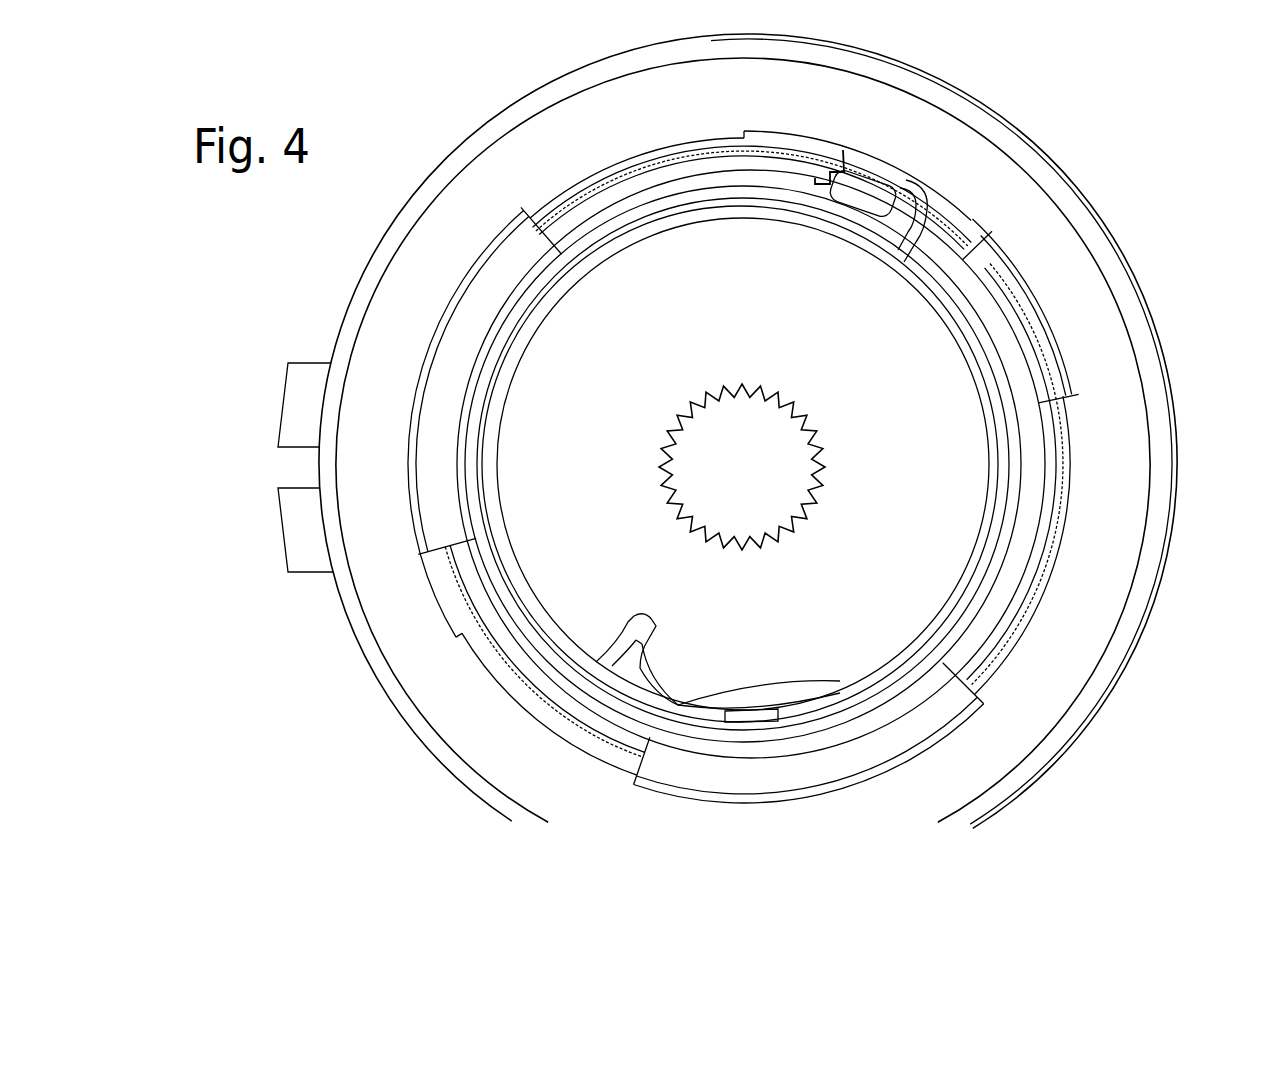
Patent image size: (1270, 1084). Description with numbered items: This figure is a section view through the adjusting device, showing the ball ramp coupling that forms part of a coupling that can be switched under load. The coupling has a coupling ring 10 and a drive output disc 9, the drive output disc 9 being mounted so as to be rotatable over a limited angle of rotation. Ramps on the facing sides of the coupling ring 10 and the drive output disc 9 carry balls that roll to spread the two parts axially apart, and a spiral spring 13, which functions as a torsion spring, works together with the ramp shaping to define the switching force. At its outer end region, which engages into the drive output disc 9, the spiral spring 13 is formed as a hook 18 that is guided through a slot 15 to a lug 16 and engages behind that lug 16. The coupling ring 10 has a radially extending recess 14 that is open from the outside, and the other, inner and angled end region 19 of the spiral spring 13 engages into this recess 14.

The drive output disc 9 is at (1025, 340).
The coupling ring 10 is at (963, 490).
The spiral spring 13 is at (970, 342).
The radially extending recess 14 is at (657, 632).
The slot 15 is at (922, 218).
The lug 16 is at (868, 200).
The hook 18 is at (885, 182).
The inner and angled end region 19 is at (589, 685).